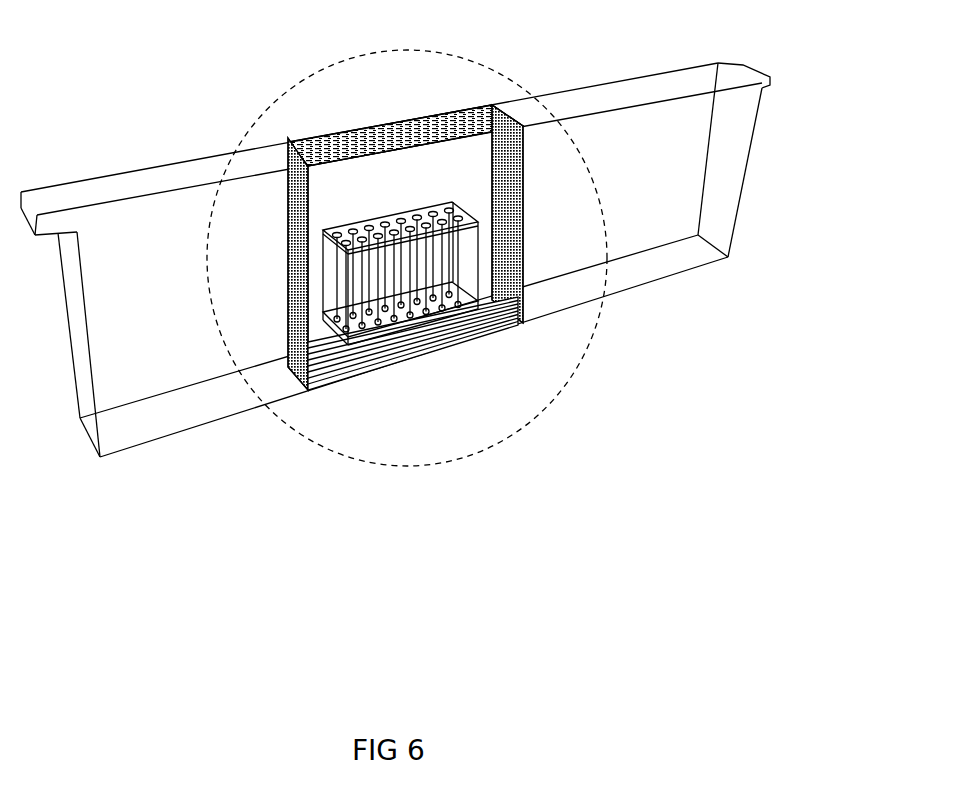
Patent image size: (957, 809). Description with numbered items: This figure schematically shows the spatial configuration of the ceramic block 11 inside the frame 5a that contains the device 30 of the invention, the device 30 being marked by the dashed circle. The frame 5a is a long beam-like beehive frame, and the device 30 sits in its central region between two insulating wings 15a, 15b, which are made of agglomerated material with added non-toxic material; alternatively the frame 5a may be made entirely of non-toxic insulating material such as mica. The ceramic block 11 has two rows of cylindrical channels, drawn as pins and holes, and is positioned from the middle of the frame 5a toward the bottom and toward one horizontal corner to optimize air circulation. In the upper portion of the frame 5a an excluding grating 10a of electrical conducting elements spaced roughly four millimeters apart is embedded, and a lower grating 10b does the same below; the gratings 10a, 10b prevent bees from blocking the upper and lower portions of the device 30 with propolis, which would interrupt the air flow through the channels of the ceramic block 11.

The frame 5a is at (70, 174).
The excluding grating 10a is at (388, 121).
The lower grating 10b is at (417, 365).
The ceramic block 11 is at (390, 203).
The insulating wing 15a is at (284, 264).
The insulating wing 15b is at (527, 207).
The device 30 is at (552, 440).